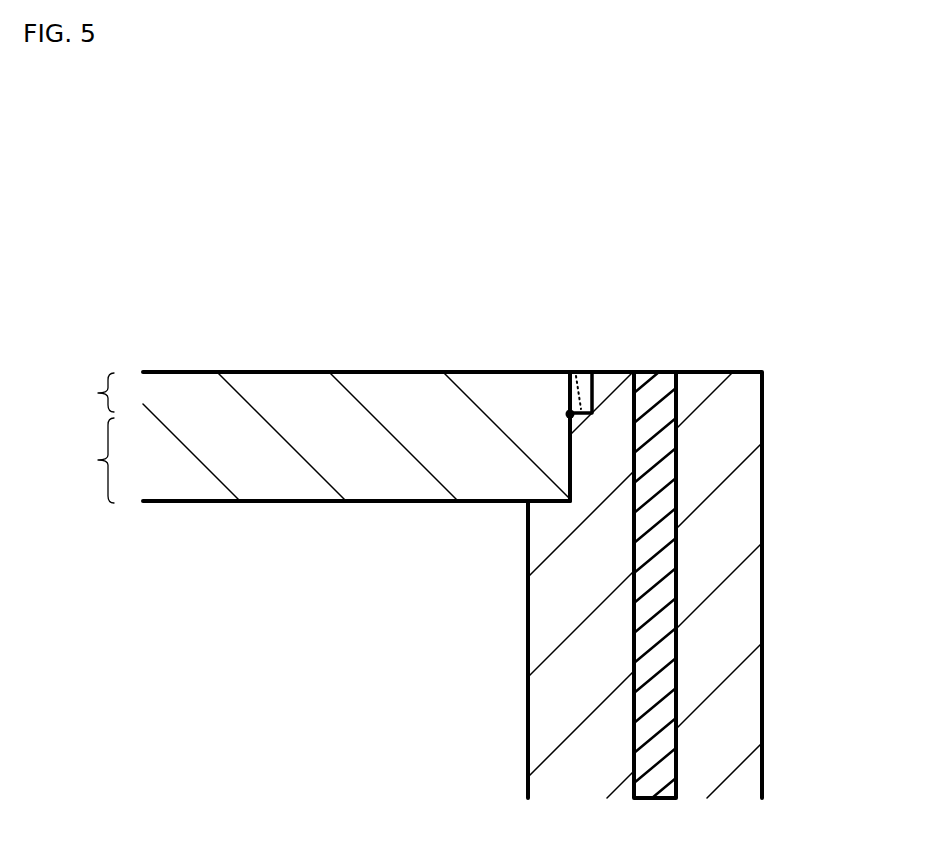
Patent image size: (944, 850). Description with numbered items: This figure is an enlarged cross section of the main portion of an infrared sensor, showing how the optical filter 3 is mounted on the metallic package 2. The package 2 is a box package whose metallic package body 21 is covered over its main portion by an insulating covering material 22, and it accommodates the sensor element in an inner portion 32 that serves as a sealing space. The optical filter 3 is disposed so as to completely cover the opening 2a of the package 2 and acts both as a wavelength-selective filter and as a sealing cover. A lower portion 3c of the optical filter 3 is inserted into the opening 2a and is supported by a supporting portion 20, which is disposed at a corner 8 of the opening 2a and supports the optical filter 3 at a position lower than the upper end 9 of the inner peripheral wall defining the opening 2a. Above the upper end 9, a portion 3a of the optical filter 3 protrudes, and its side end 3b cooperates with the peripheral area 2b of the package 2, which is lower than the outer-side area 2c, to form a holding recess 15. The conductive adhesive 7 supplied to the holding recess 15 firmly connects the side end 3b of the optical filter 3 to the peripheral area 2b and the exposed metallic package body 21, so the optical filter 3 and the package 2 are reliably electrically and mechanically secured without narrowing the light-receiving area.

The package 2 is at (766, 533).
The opening 2a is at (262, 518).
The peripheral area 2b is at (577, 386).
The outer-side area 2c is at (728, 372).
The optical filter 3 is at (184, 362).
The protruding portion 3a is at (83, 392).
The side end 3b is at (572, 372).
The lower portion 3c is at (83, 460).
The conductive adhesive 7 is at (600, 408).
The corner 8 is at (540, 481).
The upper end 9 is at (566, 414).
The holding recess 15 is at (585, 396).
The supporting portion 20 is at (543, 501).
The package body 21 is at (663, 372).
The insulating covering material 22 is at (761, 450).
The inner portion 32 is at (352, 542).